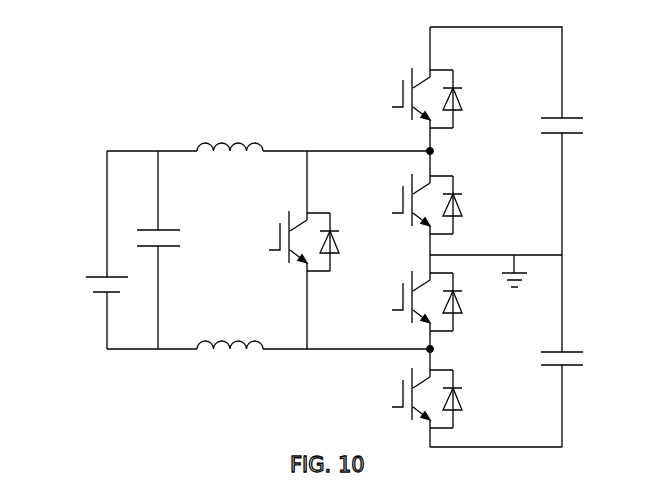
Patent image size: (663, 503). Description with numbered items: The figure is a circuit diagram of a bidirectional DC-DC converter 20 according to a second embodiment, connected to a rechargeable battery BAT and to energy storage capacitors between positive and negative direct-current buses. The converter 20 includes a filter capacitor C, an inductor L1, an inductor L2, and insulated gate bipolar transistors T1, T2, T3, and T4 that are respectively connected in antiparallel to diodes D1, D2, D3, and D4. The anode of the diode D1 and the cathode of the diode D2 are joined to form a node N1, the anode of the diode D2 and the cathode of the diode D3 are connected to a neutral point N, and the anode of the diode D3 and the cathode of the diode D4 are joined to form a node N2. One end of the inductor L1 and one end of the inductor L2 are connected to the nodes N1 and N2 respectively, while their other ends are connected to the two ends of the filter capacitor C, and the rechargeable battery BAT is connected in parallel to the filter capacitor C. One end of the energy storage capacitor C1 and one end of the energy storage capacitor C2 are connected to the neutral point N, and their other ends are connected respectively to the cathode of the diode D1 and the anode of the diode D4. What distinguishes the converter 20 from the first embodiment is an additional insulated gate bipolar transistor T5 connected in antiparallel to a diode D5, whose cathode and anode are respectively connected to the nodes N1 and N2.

The bidirectional DC-DC converter 20 is at (320, 75).
The insulated gate bipolar transistor T1 is at (412, 98).
The insulated gate bipolar transistor T2 is at (412, 204).
The insulated gate bipolar transistor T3 is at (412, 301).
The insulated gate bipolar transistor T4 is at (412, 398).
The insulated gate bipolar transistor T5 is at (290, 241).
The diode D1 is at (467, 99).
The diode D2 is at (467, 205).
The diode D3 is at (467, 302).
The diode D4 is at (467, 399).
The diode D5 is at (344, 242).
The filter capacitor C is at (157, 250).
The energy storage capacitor C1 is at (580, 125).
The energy storage capacitor C2 is at (579, 358).
The inductor L1 is at (230, 132).
The inductor L2 is at (230, 328).
The rechargeable battery BAT is at (80, 281).
The node N1 is at (445, 151).
The node N2 is at (445, 349).
The neutral point N is at (514, 285).